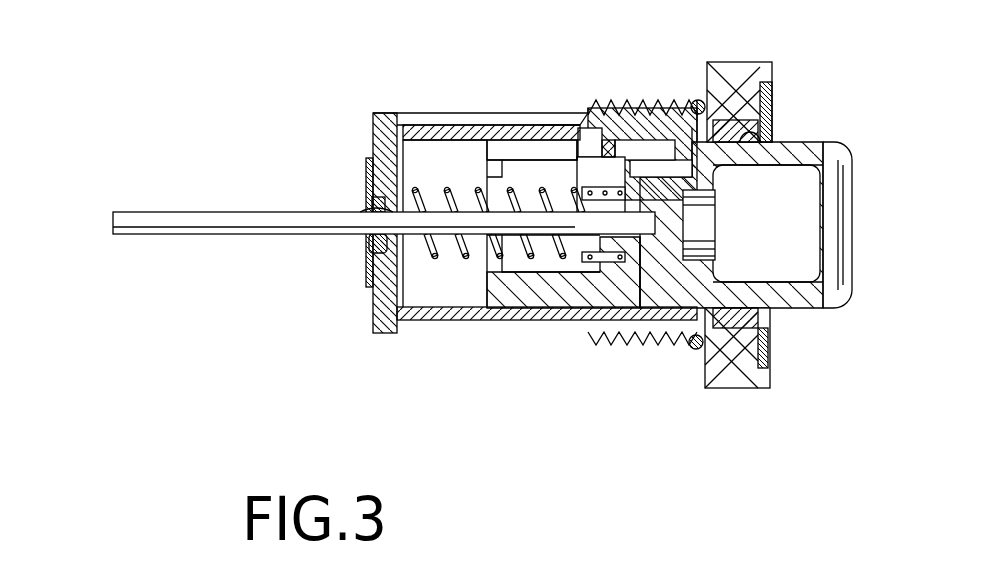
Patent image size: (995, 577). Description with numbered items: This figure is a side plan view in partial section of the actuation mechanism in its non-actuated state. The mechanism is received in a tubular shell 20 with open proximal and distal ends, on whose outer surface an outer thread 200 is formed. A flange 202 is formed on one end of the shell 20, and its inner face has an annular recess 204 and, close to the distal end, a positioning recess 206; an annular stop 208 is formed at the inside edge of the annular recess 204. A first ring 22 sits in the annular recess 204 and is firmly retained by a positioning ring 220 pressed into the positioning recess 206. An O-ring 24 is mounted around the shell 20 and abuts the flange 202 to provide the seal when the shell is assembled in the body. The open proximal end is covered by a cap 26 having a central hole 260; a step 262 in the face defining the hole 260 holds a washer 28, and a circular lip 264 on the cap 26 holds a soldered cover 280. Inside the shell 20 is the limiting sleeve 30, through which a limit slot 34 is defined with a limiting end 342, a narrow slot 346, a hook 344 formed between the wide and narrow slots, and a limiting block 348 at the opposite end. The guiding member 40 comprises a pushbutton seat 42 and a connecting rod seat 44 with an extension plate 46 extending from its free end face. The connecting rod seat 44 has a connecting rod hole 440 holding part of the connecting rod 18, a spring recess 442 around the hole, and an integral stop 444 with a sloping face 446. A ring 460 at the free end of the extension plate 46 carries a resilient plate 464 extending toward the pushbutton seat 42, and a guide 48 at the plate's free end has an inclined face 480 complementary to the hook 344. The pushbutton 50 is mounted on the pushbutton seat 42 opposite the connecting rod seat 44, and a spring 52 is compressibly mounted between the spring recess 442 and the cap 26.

The connecting rod 18 is at (138, 234).
The shell 20 is at (392, 334).
The first ring 22 is at (757, 305).
The O-ring 24 is at (703, 103).
The cap 26 is at (386, 112).
The washer 28 is at (375, 252).
The limiting sleeve 30 is at (468, 310).
The limit slot 34 is at (655, 112).
The guiding member 40 is at (592, 312).
The pushbutton seat 42 is at (818, 298).
The connecting rod seat 44 is at (672, 283).
The extension plate 46 is at (540, 290).
The guide 48 is at (595, 112).
The pushbutton 50 is at (850, 222).
The spring 52 is at (460, 262).
The outer thread 200 is at (650, 308).
The flange 202 is at (742, 390).
The annular recess 204 is at (762, 135).
The positioning recess 206 is at (773, 95).
The annular stop 208 is at (702, 350).
The positioning ring 220 is at (768, 350).
The central hole 260 is at (370, 244).
The step 262 is at (372, 152).
The circular lip 264 is at (374, 295).
The cover 280 is at (366, 192).
The limiting end 342 is at (690, 128).
The hook 344 is at (552, 124).
The narrow slot 346 is at (560, 130).
The limiting block 348 is at (537, 140).
The connecting rod hole 440 is at (640, 308).
The spring recess 442 is at (592, 268).
The stop 444 is at (630, 125).
The sloping face 446 is at (648, 140).
The ring 460 is at (487, 300).
The resilient plate 464 is at (500, 155).
The inclined face 480 is at (590, 128).